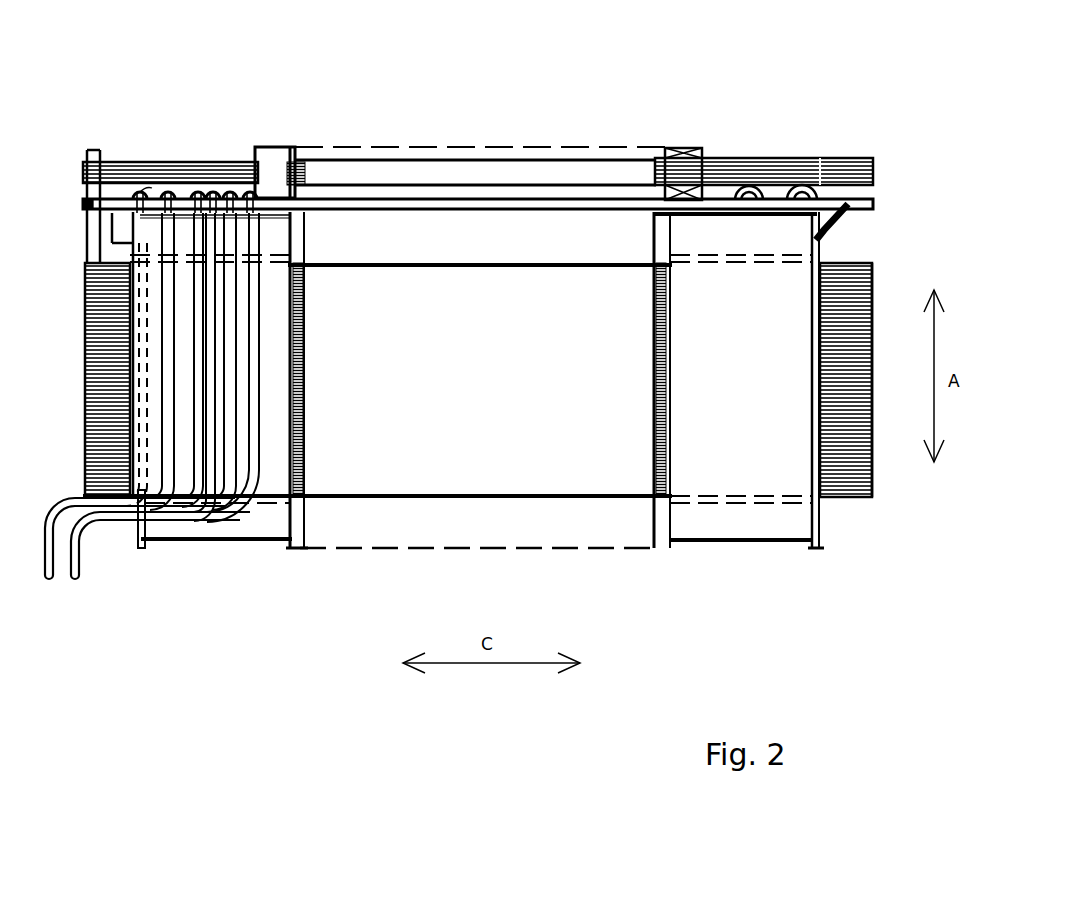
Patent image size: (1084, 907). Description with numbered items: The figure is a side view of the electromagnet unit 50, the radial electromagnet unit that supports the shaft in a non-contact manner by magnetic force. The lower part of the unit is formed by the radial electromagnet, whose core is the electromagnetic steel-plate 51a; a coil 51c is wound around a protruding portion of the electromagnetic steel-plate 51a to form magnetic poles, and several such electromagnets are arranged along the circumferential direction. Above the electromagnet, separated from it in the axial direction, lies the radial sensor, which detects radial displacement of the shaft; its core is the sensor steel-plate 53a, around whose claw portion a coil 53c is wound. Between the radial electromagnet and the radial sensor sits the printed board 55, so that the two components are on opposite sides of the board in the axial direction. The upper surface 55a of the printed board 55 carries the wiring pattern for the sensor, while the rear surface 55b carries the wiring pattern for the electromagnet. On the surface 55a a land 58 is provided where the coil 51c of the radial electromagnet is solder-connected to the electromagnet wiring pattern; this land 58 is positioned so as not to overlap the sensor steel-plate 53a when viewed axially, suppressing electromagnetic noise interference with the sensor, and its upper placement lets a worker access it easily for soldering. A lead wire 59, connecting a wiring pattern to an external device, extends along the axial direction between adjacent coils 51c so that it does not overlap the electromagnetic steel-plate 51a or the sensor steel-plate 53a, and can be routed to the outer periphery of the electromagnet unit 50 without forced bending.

The electromagnet unit 50 is at (808, 89).
The electromagnetic steel-plate 51a is at (860, 498).
The coil 51c is at (260, 530).
The sensor steel-plate 53a is at (212, 162).
The coil 53c is at (683, 150).
The printed board 55 is at (858, 203).
The surface 55a is at (442, 189).
The rear surface 55b is at (488, 212).
The land 58 is at (160, 162).
The lead wire 59 is at (173, 453).